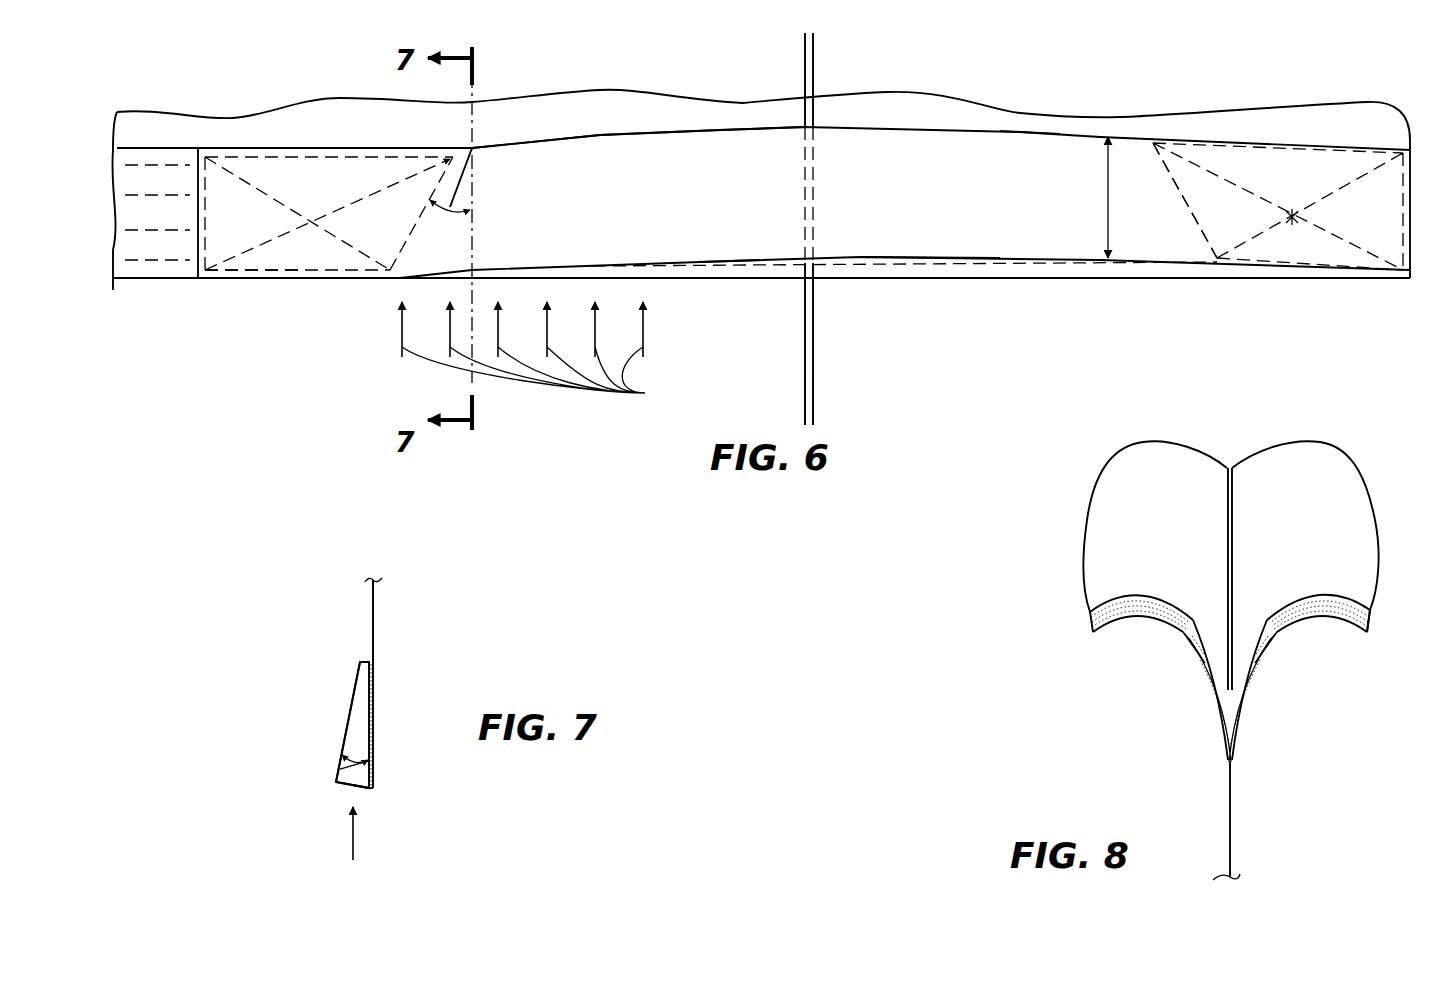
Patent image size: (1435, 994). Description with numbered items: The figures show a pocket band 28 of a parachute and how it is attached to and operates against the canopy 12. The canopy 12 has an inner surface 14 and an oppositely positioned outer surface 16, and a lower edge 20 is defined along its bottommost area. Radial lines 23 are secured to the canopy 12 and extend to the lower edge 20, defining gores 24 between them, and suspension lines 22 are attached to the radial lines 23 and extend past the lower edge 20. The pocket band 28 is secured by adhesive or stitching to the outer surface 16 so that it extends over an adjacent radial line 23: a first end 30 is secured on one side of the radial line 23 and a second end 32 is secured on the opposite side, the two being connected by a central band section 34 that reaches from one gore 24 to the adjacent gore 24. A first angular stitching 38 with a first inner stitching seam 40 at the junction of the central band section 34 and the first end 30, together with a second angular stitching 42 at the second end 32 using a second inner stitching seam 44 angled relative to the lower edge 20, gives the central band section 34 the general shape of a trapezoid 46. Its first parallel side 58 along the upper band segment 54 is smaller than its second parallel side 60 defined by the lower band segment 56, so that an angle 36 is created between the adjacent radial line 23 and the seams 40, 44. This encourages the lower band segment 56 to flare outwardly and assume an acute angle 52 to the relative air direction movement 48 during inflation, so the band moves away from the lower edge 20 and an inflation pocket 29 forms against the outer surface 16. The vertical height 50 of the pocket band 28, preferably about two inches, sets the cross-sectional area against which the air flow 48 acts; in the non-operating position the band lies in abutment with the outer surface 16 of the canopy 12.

In FIG. 6, the canopy 12 is at (190, 115).
In FIG. 7, the canopy 12 is at (377, 628).
In FIG. 8, the canopy 12 is at (1326, 525).
In FIG. 7, the inner surface 14 is at (377, 605).
In FIG. 7, the outer surface 16 is at (372, 640).
In FIG. 6, the lower edge 20 is at (865, 277).
In FIG. 7, the lower edge 20 is at (373, 788).
In FIG. 8, the lower edge 20 is at (1337, 620).
In FIG. 6, the suspension lines 22 is at (808, 398).
In FIG. 8, the suspension lines 22 is at (1232, 797).
In FIG. 6, the radial lines 23 is at (813, 72).
In FIG. 8, the radial lines 23 is at (1230, 498).
In FIG. 8, the gores 24 is at (1217, 628).
In FIG. 6, the pocket band 28 is at (530, 140).
In FIG. 7, the pocket band 28 is at (347, 727).
In FIG. 8, the pocket band 28 is at (1212, 672).
In FIG. 7, the inflation pocket 29 is at (352, 778).
In FIG. 6, the first end 30 is at (287, 260).
In FIG. 8, the first end 30 is at (1198, 653).
In FIG. 6, the second end 32 is at (1313, 242).
In FIG. 8, the second end 32 is at (1253, 658).
In FIG. 6, the central band section 34 is at (615, 216).
In FIG. 7, the central band section 34 is at (358, 678).
In FIG. 8, the central band section 34 is at (1227, 715).
In FIG. 6, the angle 36 is at (472, 148).
In FIG. 6, the first angular stitching 38 is at (333, 238).
In FIG. 6, the first inner stitching seam 40 is at (407, 240).
In FIG. 6, the second angular stitching 42 is at (1292, 217).
In FIG. 6, the second inner stitching seam 44 is at (1197, 220).
In FIG. 6, the trapezoid 46 is at (1023, 133).
In FIG. 6, the relative air direction movement 48 is at (540, 354).
In FIG. 7, the relative air direction movement 48 is at (353, 840).
In FIG. 6, the vertical height 50 is at (1108, 178).
In FIG. 7, the acute angle 52 is at (345, 766).
In FIG. 6, the upper band segment 54 is at (607, 138).
In FIG. 6, the lower band segment 56 is at (708, 245).
In FIG. 6, the first parallel side 58 is at (742, 127).
In FIG. 7, the first parallel side 58 is at (362, 658).
In FIG. 6, the second parallel side 60 is at (945, 258).
In FIG. 7, the second parallel side 60 is at (340, 783).